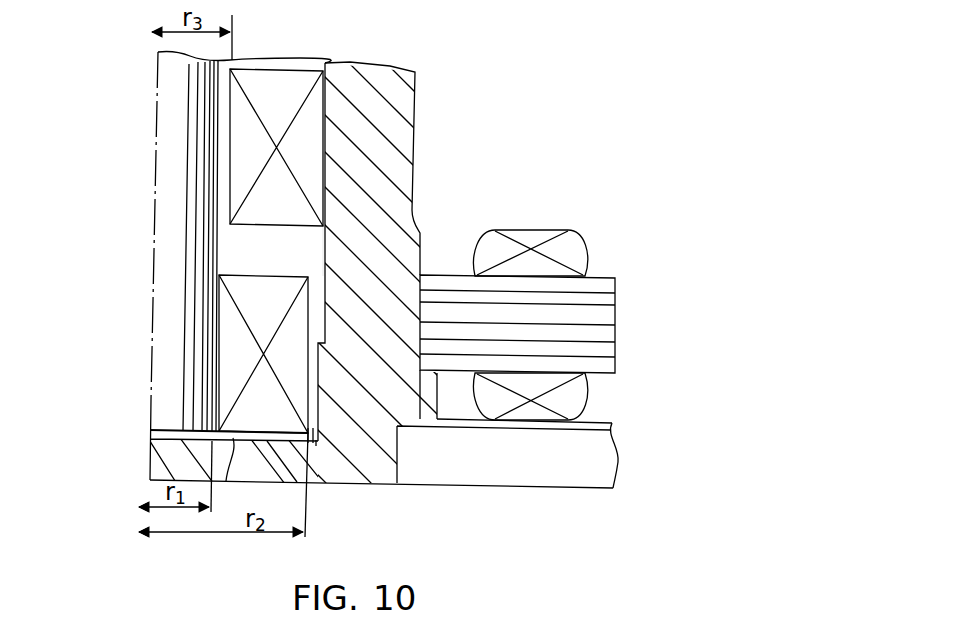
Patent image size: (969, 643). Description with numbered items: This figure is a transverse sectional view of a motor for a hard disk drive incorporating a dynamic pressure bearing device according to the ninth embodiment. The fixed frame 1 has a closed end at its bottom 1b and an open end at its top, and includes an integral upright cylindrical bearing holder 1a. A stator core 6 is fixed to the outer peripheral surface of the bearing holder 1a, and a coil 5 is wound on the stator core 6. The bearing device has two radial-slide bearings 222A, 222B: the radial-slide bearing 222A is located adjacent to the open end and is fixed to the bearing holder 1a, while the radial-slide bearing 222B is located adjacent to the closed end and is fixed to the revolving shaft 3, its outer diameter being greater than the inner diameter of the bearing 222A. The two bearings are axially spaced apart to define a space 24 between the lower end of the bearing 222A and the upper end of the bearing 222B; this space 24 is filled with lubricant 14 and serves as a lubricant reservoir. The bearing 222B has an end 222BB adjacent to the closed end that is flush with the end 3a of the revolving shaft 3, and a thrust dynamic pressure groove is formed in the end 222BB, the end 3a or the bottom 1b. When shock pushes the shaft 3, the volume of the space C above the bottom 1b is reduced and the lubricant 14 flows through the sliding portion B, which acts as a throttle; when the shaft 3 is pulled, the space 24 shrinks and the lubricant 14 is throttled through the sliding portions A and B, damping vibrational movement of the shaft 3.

The frame 1 is at (421, 489).
The bearing holder 1a is at (402, 208).
The bottom 1b is at (150, 468).
The revolving shaft 3 is at (173, 163).
The end of the revolving shaft 3a is at (150, 433).
The coil 5 is at (573, 258).
The stator core 6 is at (610, 310).
The lubricant 14 is at (228, 231).
The space 24 is at (268, 256).
The radial-slide bearing 222A is at (290, 85).
The radial-slide bearing 222B is at (225, 320).
The end of the radial-slide bearing 222BB is at (308, 484).
The sliding portion A is at (233, 48).
The sliding portion B is at (316, 440).
The space C is at (225, 478).